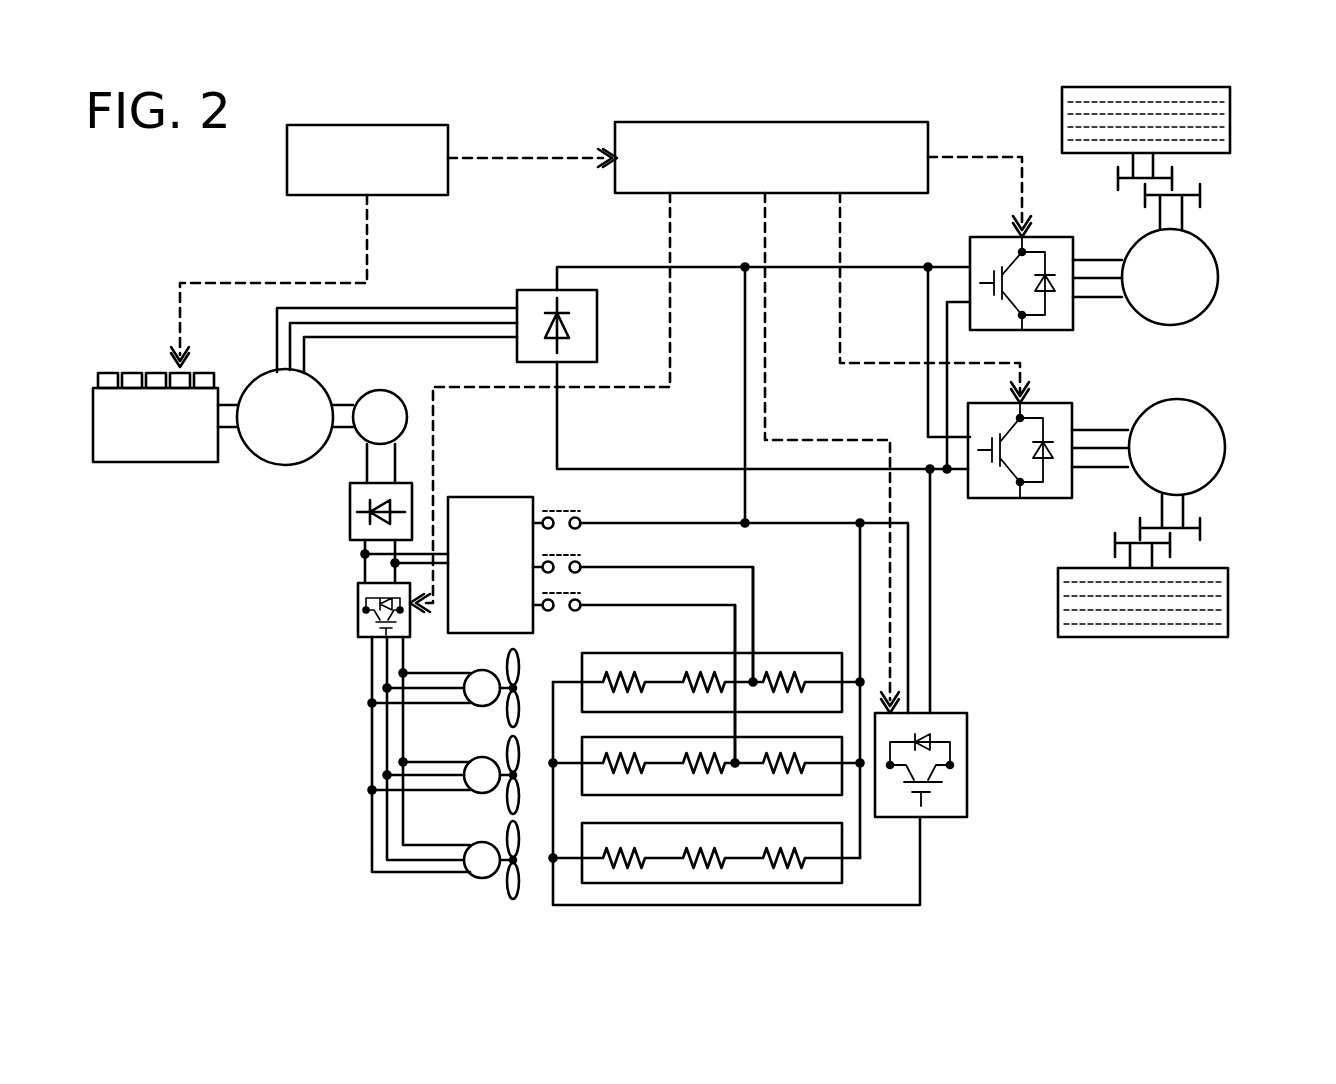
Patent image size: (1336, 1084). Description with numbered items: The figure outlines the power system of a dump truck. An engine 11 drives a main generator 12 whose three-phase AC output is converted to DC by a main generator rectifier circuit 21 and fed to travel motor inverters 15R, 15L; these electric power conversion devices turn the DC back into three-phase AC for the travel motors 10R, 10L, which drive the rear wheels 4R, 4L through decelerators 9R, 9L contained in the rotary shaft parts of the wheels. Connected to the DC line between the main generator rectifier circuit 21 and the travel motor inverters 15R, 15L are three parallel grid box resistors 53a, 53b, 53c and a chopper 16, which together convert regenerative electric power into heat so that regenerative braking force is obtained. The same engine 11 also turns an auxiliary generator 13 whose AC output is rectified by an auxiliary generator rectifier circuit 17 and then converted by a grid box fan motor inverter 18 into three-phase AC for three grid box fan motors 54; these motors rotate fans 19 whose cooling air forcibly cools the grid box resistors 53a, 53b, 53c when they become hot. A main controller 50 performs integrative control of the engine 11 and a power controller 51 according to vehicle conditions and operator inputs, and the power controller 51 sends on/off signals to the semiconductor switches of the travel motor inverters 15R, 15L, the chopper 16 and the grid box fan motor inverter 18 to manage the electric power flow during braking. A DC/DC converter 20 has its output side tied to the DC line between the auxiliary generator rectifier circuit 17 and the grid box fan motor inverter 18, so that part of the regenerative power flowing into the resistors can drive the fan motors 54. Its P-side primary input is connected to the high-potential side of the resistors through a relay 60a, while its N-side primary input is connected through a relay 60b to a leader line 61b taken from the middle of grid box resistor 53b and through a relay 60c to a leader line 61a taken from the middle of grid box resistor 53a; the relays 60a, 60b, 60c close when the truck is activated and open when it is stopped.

The rear wheel 4R is at (1212, 123).
The rear wheel 4L is at (1155, 640).
The decelerator 9R is at (1118, 178).
The decelerator 9L is at (1110, 553).
The travel motor 10R is at (1220, 268).
The travel motor 10L is at (1225, 445).
The engine 11 is at (150, 432).
The main generator 12 is at (270, 465).
The auxiliary generator 13 is at (398, 394).
The travel motor inverter 15R is at (1047, 237).
The travel motor inverter 15L is at (1050, 400).
The chopper 16 is at (967, 778).
The auxiliary generator rectifier circuit 17 is at (345, 528).
The grid box fan motor inverter 18 is at (355, 600).
The fan 19 is at (519, 667).
The DC/DC converter 20 is at (490, 497).
The main generator rectifier circuit 21 is at (520, 288).
The main controller 50 is at (300, 198).
The power controller 51 is at (780, 122).
The grid box resistor 53a is at (790, 648).
The grid box resistor 53b is at (826, 797).
The grid box resistor 53c is at (828, 885).
The grid box fan motor 54 is at (472, 704).
The relay 60a is at (556, 512).
The relay 60b is at (560, 594).
The relay 60c is at (560, 556).
The leader line 61a is at (757, 585).
The leader line 61b is at (733, 607).